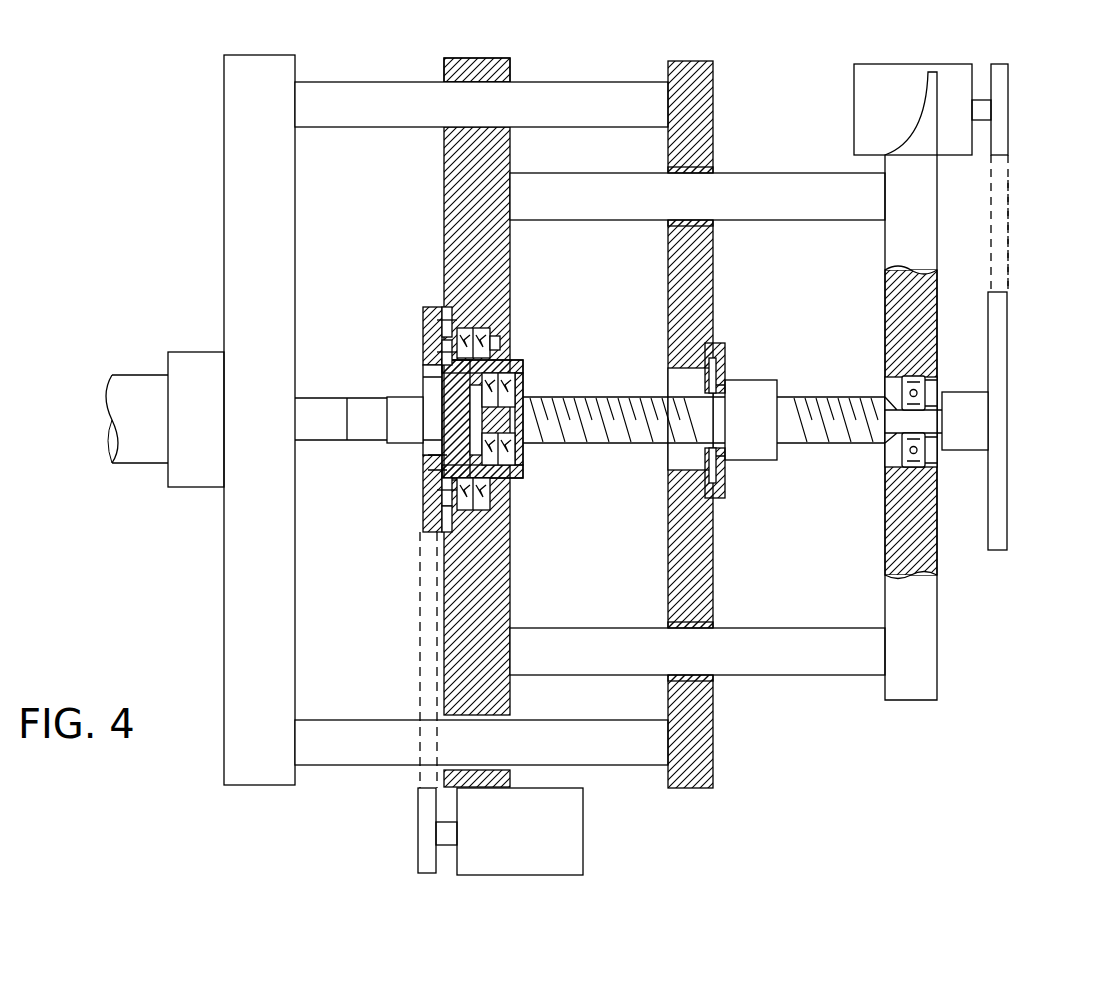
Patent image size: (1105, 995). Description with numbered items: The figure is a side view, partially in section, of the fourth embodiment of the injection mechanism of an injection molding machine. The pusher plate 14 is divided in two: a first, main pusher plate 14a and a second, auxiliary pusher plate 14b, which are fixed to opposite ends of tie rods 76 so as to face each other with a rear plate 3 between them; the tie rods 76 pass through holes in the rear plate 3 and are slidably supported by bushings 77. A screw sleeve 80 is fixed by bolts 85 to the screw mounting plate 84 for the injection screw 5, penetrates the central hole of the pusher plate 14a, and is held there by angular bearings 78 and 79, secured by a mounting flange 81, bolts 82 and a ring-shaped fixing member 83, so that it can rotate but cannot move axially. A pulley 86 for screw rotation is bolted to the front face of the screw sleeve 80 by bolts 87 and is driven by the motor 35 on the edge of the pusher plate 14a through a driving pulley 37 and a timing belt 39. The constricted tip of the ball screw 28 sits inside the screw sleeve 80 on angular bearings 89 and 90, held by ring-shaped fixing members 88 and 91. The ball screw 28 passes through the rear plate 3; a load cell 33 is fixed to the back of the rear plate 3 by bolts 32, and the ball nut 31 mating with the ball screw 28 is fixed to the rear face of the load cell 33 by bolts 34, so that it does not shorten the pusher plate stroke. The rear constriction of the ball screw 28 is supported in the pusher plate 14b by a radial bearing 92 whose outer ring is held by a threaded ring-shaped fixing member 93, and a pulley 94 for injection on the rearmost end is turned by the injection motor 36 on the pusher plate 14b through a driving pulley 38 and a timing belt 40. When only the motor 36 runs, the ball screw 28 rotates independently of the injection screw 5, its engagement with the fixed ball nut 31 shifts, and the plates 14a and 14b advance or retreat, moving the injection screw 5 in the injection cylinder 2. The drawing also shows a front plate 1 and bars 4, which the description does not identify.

The stationary platen 1 is at (224, 603).
The injection cylinder 2 is at (148, 463).
The rear plate 3 is at (698, 548).
The tie bars 4 is at (352, 118).
The injection screw 5 is at (316, 436).
The pusher plate 14 is at (531, 44).
The first pusher plate 14a is at (500, 258).
The second pusher plate 14b is at (896, 248).
The ball screw 28 is at (622, 432).
The ball nut 31 is at (750, 451).
The bolts 32 is at (712, 348).
The load cell 33 is at (722, 368).
The bolts 34 is at (730, 382).
The motor for screw rotation 35 is at (572, 868).
The motor for injection 36 is at (866, 104).
The driving pulley 37 is at (422, 803).
The driving pulley 38 is at (1010, 130).
The timing belt 39 is at (425, 612).
The timing belt 40 is at (1010, 232).
The tie rods 76 is at (790, 188).
The bushings 77 is at (700, 226).
The angular bearing 78 is at (423, 346).
The angular bearing 79 is at (500, 325).
The screw sleeve 80 is at (522, 364).
The mounting flange 81 is at (432, 318).
The bolts 82 is at (446, 330).
The ring-shaped fixing member 83 is at (500, 352).
The screw mounting plate 84 is at (418, 420).
The bolts 85 is at (428, 455).
The pulley for screw rotation 86 is at (428, 506).
The bolts 87 is at (430, 470).
The ring-shaped fixing member 88 is at (519, 460).
The angular bearing 89 is at (498, 490).
The angular bearing 90 is at (520, 398).
The ring-shaped fixing member 91 is at (450, 396).
The radial bearing 92 is at (903, 450).
The ring-shaped fixing member 93 is at (927, 460).
The pulley for injection 94 is at (1003, 382).